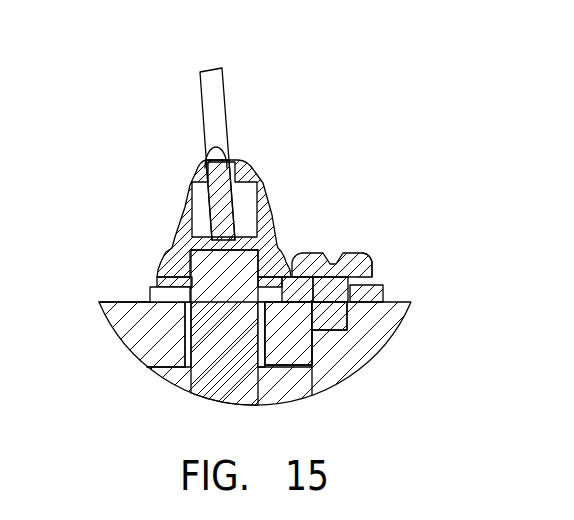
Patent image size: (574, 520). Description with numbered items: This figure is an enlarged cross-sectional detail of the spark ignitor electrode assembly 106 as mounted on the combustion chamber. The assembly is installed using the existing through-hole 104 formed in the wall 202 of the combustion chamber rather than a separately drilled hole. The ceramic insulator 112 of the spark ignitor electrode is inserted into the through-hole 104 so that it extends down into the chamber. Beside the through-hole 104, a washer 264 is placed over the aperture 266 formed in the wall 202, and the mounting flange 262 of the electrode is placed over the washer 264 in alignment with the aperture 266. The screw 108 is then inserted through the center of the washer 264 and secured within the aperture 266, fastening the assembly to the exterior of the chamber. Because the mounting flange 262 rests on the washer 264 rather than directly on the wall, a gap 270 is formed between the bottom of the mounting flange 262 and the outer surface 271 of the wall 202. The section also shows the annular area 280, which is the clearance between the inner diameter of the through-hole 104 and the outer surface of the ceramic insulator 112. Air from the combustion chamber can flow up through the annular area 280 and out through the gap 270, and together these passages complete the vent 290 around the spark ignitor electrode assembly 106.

The through-hole 104 is at (185, 327).
The spark ignitor electrode assembly 106 is at (186, 103).
The screw 108 is at (352, 260).
The ceramic insulator 112 is at (220, 369).
The wall 202 is at (147, 347).
The mounting flange 262 is at (298, 285).
The washer 264 is at (384, 296).
The aperture 266 is at (373, 277).
The gap 270 is at (160, 297).
The outer surface 271 is at (117, 300).
The annular area 280 is at (262, 346).
The vent 290 is at (276, 285).